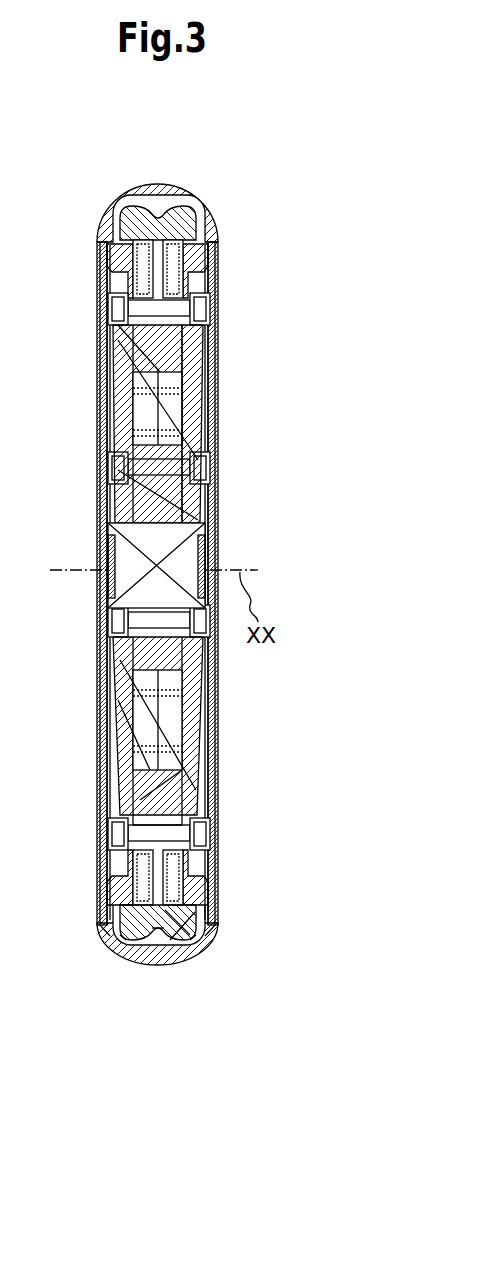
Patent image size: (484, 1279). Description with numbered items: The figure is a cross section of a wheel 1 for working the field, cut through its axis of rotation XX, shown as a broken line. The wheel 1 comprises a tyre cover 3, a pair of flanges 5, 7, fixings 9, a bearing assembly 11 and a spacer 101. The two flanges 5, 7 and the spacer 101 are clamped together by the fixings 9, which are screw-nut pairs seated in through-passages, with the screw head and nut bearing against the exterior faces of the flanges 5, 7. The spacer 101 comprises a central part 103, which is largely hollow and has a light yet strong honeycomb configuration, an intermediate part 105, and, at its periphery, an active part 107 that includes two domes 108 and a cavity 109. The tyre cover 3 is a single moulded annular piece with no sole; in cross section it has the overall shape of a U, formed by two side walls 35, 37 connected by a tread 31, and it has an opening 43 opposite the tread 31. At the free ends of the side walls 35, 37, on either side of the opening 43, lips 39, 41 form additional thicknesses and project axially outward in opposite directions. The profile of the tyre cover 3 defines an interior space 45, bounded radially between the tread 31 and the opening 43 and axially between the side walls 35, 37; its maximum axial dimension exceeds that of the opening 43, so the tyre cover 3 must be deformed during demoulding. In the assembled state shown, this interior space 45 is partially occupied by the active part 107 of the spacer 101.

The wheel 1 is at (213, 152).
The tyre cover 3 is at (125, 183).
The interior space 45 is at (181, 183).
The spacer 101 is at (150, 190).
The fixings 9 is at (184, 282).
The flange 7 is at (126, 378).
The flange 5 is at (199, 353).
The bearing assembly 11 is at (162, 540).
The central part 103 is at (168, 713).
The intermediate part 105 is at (178, 882).
The lip 41 is at (110, 882).
The lip 39 is at (195, 882).
The active part 107 is at (163, 965).
The opening 43 is at (182, 943).
The cavity 109 is at (152, 932).
The domes 108 is at (113, 940).
The tread 31 is at (133, 967).
The side wall 37 is at (98, 930).
The side wall 35 is at (213, 930).